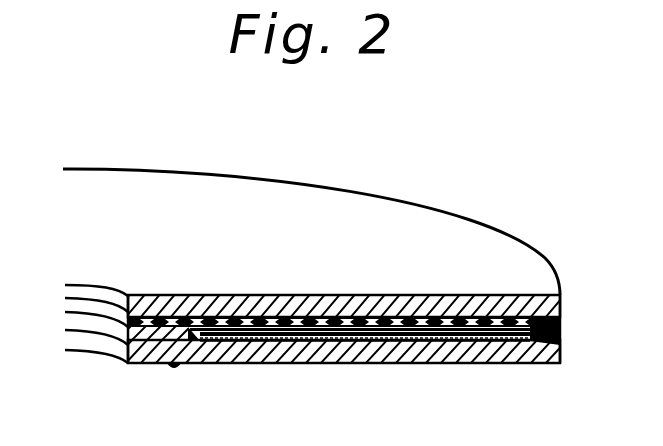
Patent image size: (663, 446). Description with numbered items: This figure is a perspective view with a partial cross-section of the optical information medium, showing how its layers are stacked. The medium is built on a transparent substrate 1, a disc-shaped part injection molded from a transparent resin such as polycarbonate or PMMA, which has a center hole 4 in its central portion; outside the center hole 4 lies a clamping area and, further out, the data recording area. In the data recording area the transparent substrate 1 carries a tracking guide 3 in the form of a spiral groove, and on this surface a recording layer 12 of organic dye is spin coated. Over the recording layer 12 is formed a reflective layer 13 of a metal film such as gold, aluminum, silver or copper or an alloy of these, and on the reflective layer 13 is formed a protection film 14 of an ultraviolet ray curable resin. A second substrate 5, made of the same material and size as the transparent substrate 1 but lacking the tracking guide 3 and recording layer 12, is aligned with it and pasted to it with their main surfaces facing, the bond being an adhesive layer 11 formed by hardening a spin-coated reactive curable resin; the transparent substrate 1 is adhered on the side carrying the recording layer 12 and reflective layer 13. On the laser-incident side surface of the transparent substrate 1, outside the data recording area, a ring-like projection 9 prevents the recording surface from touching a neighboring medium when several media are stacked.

The transparent substrate 1 is at (308, 350).
The tracking guide 3 is at (442, 345).
The center hole 4 is at (92, 338).
The substrate 5 is at (458, 230).
The ring-like projection 9 is at (175, 368).
The adhesive layer 11 is at (352, 295).
The recording layer 12 is at (242, 358).
The reflective layer 13 is at (472, 328).
The protection film 14 is at (410, 295).